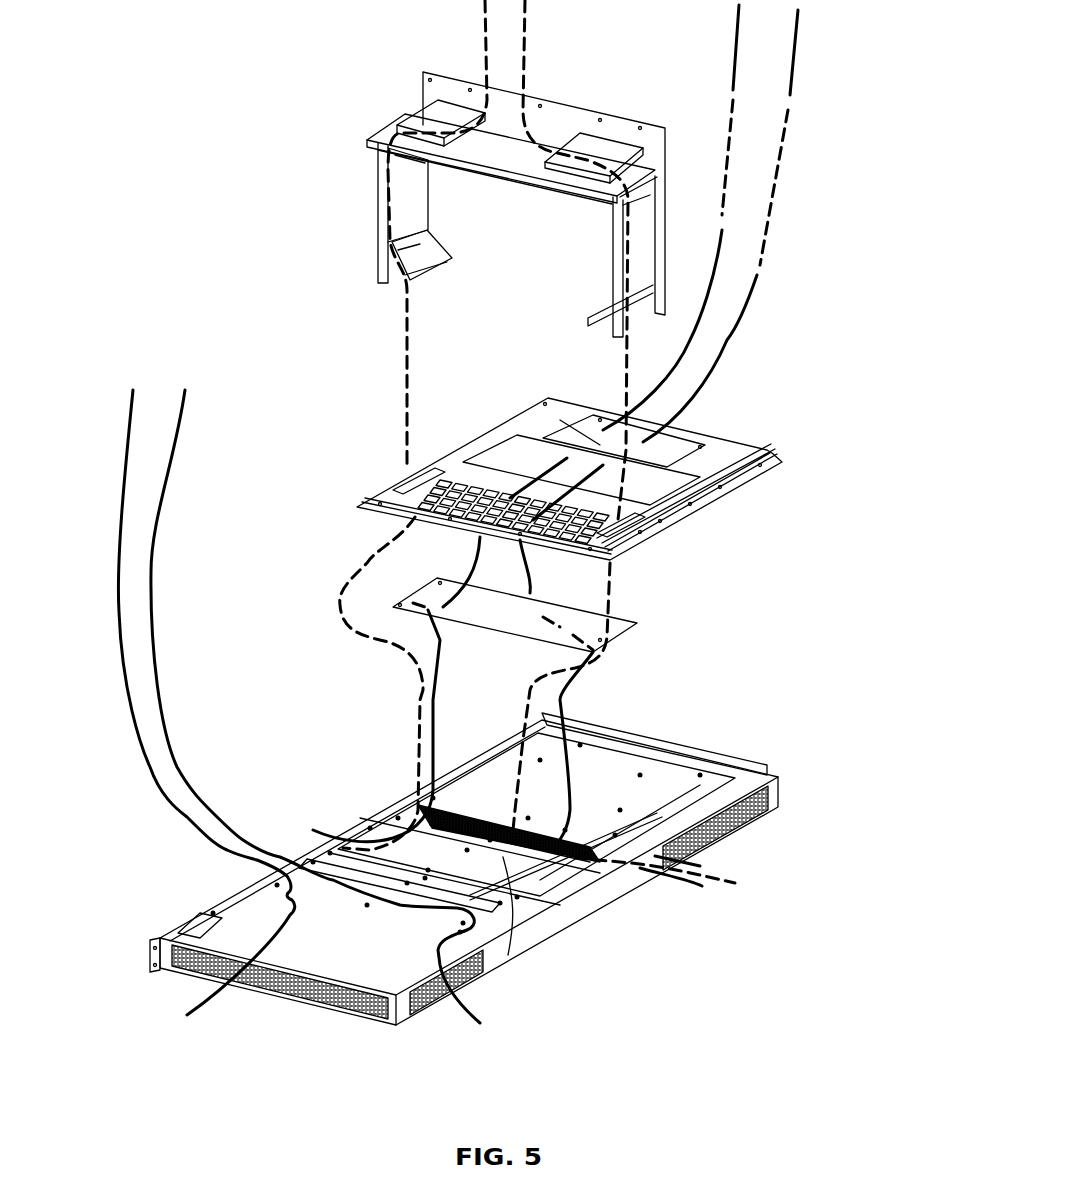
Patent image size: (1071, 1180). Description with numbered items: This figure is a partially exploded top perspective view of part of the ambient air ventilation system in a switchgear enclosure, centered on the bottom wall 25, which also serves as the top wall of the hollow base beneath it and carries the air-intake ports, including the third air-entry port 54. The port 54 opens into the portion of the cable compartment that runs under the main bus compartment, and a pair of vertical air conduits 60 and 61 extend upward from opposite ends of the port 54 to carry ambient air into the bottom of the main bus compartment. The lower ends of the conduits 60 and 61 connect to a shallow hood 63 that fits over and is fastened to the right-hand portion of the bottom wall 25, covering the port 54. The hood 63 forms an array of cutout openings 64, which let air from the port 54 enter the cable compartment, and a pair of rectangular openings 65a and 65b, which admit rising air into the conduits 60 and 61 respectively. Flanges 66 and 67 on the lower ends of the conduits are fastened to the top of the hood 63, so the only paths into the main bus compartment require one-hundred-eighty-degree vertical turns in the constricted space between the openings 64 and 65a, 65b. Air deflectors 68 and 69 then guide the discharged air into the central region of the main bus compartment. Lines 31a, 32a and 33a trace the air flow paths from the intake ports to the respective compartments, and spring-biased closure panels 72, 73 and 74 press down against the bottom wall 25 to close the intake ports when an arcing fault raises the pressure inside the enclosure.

The bottom wall 25 is at (358, 948).
The air flow path line 31a is at (130, 418).
The air flow path line 32a is at (485, 25).
The air flow path line 33a is at (737, 30).
The air-intake port 54 is at (548, 880).
The vertical air conduit 60 is at (380, 203).
The vertical air conduit 61 is at (613, 238).
The hood 63 is at (730, 450).
The cutout openings 64 is at (457, 482).
The rectangular opening 65a is at (402, 492).
The rectangular opening 65b is at (632, 523).
The flange 66 is at (447, 258).
The flange 67 is at (593, 320).
The air deflector 68 is at (422, 113).
The air deflector 69 is at (607, 155).
The closure panel 72 is at (508, 955).
The closure panel 73 is at (548, 880).
The closure panel 74 is at (610, 623).